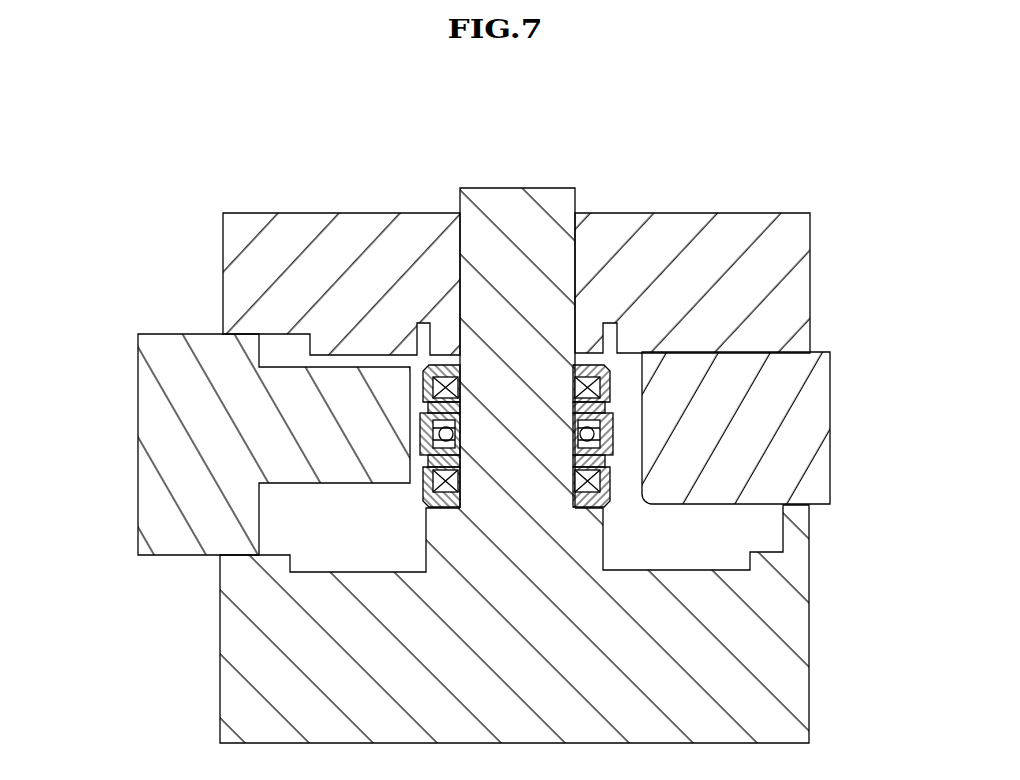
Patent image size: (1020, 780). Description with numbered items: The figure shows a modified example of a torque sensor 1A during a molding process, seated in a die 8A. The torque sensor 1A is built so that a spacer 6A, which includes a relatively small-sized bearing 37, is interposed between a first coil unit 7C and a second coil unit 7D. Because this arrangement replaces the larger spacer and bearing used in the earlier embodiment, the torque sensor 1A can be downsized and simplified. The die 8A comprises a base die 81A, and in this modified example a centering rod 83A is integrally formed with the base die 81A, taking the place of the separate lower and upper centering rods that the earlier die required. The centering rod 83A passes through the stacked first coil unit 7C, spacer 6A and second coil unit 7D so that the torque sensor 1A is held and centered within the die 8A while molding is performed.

The die 8A is at (197, 331).
The base die 81A is at (217, 636).
The centering rod 83A is at (513, 188).
The torque sensor 1A is at (651, 338).
The first coil unit 7C is at (612, 394).
The spacer 6A is at (614, 426).
The bearing 37 is at (594, 434).
The second coil unit 7D is at (612, 484).